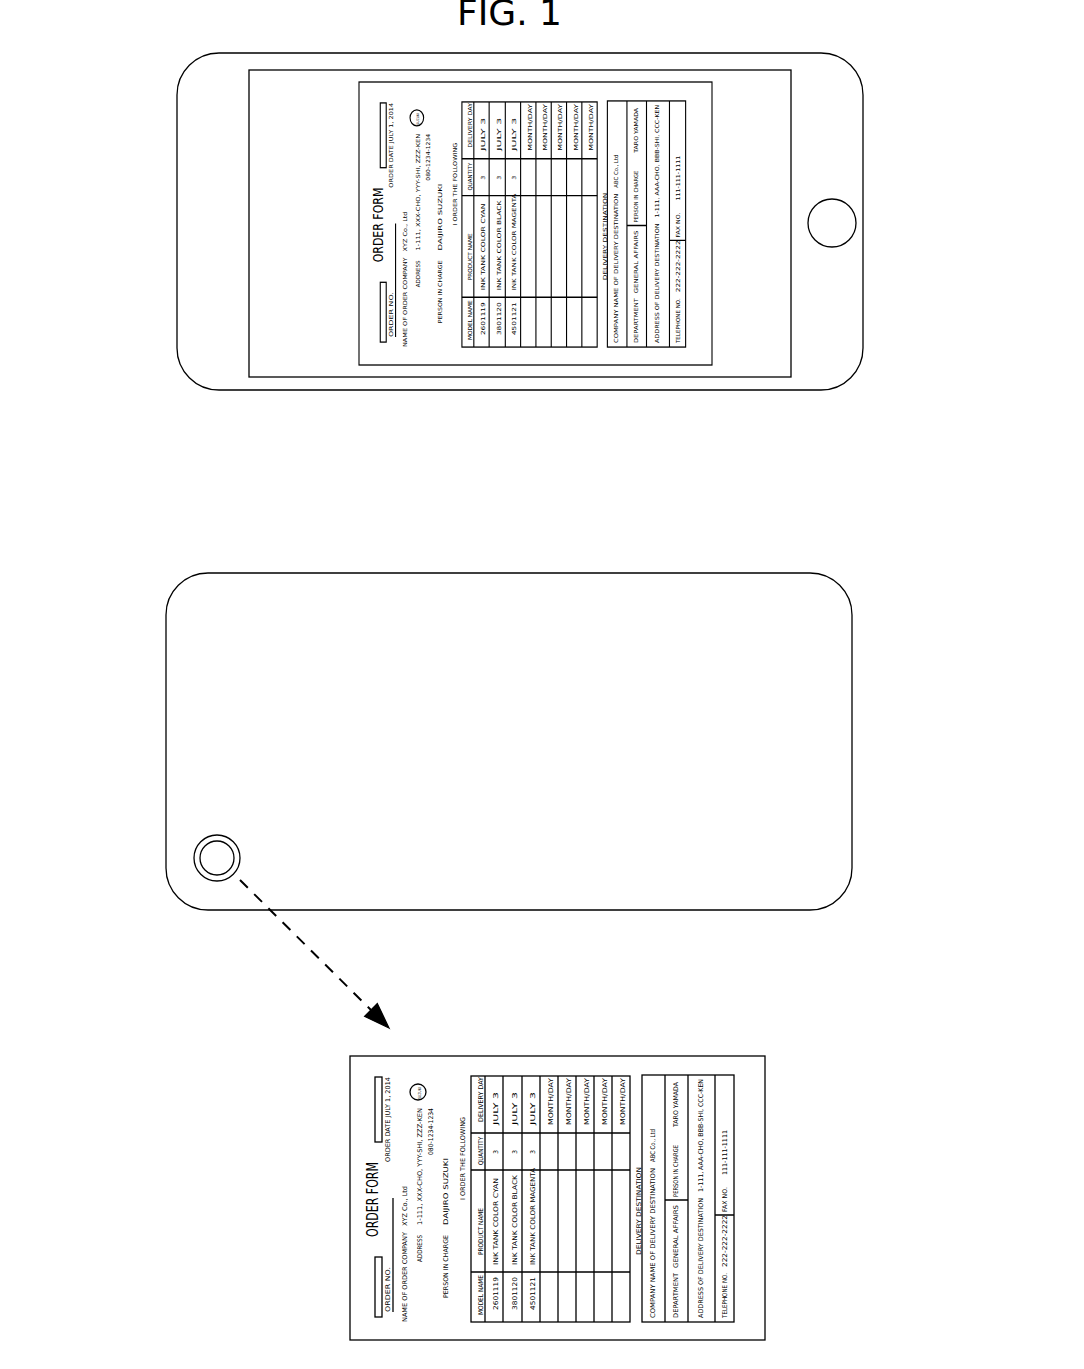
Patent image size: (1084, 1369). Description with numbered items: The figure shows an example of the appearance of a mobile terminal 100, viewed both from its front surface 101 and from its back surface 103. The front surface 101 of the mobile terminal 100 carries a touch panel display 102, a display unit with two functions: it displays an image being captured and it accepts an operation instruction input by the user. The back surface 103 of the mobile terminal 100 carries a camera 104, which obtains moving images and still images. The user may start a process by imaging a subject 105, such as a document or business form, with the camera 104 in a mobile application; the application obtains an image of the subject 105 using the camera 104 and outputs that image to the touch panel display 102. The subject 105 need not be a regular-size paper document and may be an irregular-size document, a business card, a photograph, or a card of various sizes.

The mobile terminal 100 is at (807, 400).
The front surface 101 is at (178, 265).
The touch panel display 102 is at (290, 347).
The back surface 103 is at (250, 573).
The camera 104 is at (193, 855).
The subject 105 is at (643, 1057).